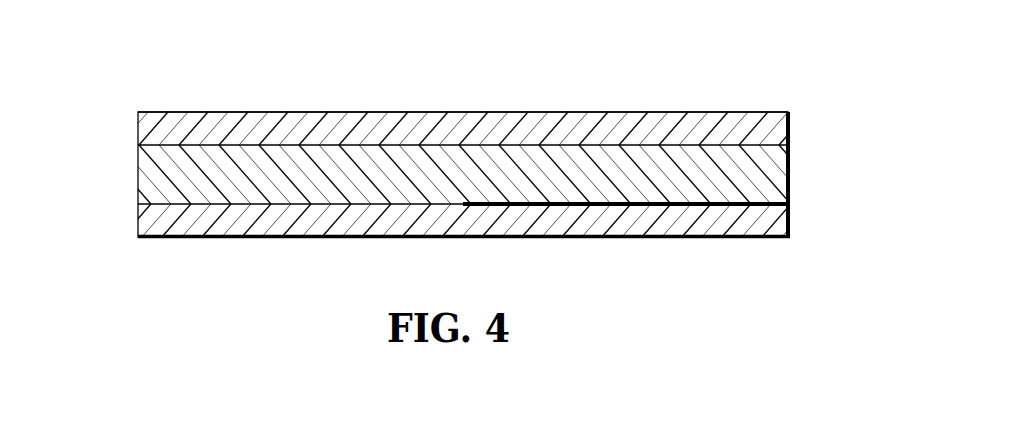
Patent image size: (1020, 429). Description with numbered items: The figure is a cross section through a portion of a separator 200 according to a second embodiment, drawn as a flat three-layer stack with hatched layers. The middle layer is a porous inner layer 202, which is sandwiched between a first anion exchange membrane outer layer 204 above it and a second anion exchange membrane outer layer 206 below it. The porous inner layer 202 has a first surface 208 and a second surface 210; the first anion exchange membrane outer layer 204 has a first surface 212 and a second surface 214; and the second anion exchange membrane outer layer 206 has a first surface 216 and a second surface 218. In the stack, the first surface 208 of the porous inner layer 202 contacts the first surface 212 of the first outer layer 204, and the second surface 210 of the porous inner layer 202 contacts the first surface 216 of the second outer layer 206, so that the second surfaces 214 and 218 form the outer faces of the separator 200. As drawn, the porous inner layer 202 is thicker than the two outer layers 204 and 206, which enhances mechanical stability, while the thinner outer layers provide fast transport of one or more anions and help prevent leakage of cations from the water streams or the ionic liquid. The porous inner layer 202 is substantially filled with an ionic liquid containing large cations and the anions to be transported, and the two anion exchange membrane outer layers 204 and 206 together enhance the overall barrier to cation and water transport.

The separator 200 is at (258, 302).
The porous inner layer 202 is at (138, 175).
The first anion exchange membrane outer layer 204 is at (138, 128).
The second anion exchange membrane outer layer 206 is at (138, 222).
The first surface of porous inner layer 208 is at (788, 145).
The second surface of porous inner layer 210 is at (788, 204).
The first surface of first anion exchange membrane outer layer 212 is at (138, 145).
The second surface of first anion exchange membrane outer layer 214 is at (788, 112).
The first surface of second anion exchange membrane outer layer 216 is at (138, 204).
The second surface of second anion exchange membrane outer layer 218 is at (788, 237).